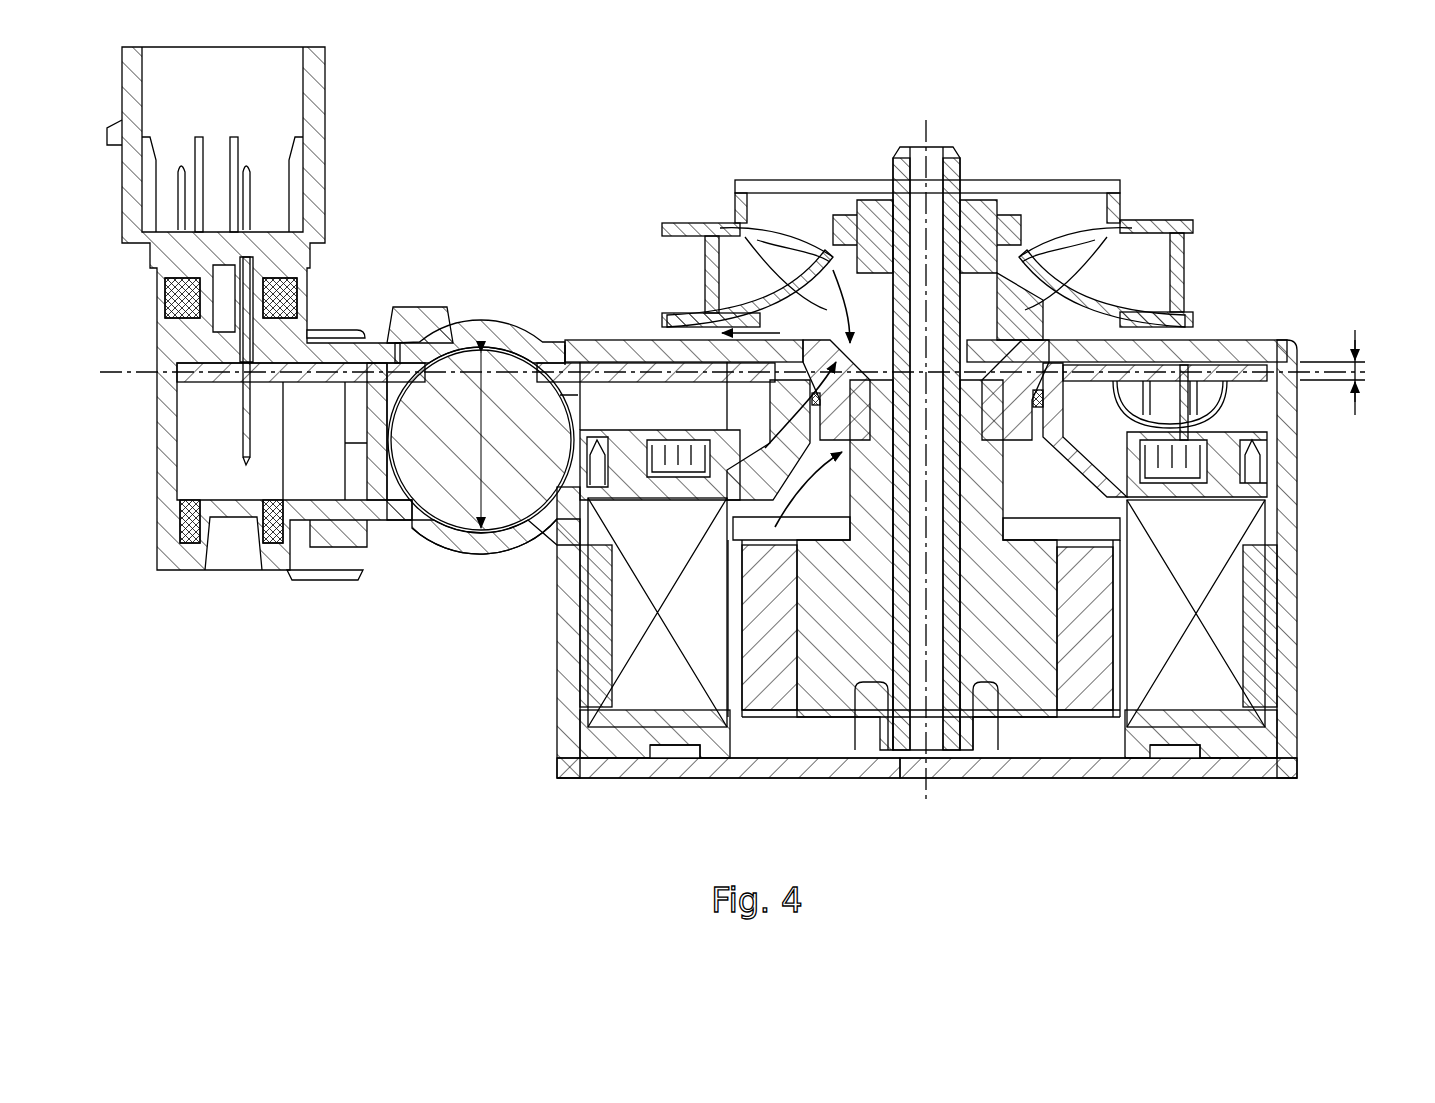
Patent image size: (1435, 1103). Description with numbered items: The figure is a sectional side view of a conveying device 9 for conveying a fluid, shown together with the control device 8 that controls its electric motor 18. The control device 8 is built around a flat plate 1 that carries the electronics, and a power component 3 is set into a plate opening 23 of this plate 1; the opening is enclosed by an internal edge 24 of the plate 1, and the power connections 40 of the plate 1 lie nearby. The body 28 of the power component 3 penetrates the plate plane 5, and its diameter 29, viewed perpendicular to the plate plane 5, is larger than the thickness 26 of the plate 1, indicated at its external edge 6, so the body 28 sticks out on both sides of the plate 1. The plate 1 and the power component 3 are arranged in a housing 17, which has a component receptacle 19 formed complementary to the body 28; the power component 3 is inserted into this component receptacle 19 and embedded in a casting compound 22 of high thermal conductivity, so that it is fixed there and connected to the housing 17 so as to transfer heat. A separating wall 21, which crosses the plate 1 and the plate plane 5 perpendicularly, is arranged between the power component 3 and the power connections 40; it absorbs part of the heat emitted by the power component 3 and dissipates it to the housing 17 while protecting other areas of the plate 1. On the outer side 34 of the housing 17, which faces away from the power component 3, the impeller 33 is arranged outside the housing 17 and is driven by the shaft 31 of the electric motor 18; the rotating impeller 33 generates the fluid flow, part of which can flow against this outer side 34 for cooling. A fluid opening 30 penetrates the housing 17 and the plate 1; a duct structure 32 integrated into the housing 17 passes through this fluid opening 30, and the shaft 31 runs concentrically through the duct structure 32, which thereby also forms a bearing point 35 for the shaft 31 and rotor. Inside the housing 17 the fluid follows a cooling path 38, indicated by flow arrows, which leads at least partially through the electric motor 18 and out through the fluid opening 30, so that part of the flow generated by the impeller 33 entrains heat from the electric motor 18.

The plate 1 is at (352, 360).
The power component 3 is at (527, 448).
The plate plane 5 is at (105, 371).
The external edge 6 is at (1262, 381).
The control device 8 is at (1314, 337).
The conveying device 9 is at (1294, 204).
The housing 17 is at (1270, 338).
The electric motor 18 is at (1051, 724).
The component receptacle 19 is at (481, 320).
The separating wall 21 is at (371, 487).
The casting compound 22 is at (438, 530).
The plate opening 23 is at (551, 363).
The internal edge 24 is at (420, 336).
The thickness 26 is at (1360, 372).
The body 28 is at (574, 392).
The diameter 29 is at (496, 400).
The fluid opening 30 is at (827, 257).
The shaft 31 is at (953, 148).
The duct structure 32 is at (827, 350).
The impeller 33 is at (1143, 227).
The outer side 34 is at (628, 341).
The bearing point 35 is at (969, 336).
The cooling path 38 is at (771, 468).
The power connections 40 is at (244, 427).